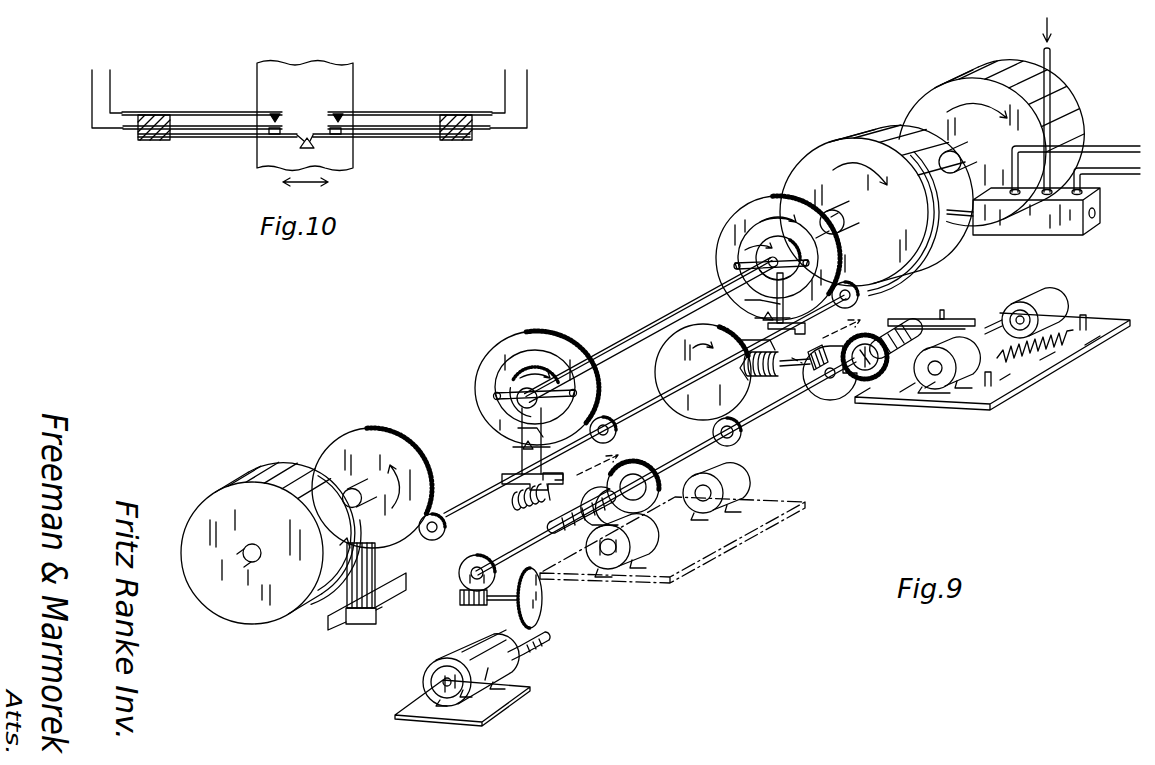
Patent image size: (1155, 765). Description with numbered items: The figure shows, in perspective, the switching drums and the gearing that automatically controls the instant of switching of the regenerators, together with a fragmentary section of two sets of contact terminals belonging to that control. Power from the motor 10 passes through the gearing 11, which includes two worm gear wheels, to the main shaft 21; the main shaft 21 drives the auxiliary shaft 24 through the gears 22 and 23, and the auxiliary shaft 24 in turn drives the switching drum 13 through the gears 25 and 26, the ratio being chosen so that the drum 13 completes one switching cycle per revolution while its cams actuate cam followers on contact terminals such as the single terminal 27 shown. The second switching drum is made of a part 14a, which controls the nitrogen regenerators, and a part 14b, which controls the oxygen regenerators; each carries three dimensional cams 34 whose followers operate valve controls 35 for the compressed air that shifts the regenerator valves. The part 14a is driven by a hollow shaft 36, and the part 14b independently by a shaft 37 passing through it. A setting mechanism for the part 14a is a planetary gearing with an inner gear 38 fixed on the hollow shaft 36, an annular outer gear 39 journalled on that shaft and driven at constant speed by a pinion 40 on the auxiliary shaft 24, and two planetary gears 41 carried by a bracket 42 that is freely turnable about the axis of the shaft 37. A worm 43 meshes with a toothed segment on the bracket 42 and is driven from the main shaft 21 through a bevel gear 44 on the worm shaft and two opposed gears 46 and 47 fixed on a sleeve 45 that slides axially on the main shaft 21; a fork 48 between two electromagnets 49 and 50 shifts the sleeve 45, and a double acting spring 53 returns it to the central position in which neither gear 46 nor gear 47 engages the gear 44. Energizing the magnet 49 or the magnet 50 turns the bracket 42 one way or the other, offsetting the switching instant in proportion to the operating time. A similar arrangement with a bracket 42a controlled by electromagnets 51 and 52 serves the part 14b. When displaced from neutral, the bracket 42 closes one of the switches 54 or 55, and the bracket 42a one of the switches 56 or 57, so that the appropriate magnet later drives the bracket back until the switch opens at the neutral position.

In FIG. 9, the motor 10 is at (465, 650).
In FIG. 9, the gearing 11 is at (505, 598).
In FIG. 9, the switching drum 13 is at (218, 507).
In FIG. 9, the part of switching drum 14a is at (807, 173).
In FIG. 9, the part of switching drum 14b is at (932, 103).
In FIG. 9, the main shaft 21 is at (765, 415).
In FIG. 9, the gear 22 is at (738, 440).
In FIG. 9, the gear 23 is at (700, 405).
In FIG. 9, the auxiliary shaft 24 is at (660, 410).
In FIG. 9, the gear 25 is at (434, 541).
In FIG. 9, the gear 26 is at (362, 440).
In FIG. 9, the contact terminal 27 is at (357, 620).
In FIG. 9, the three dimensional cam 34 is at (930, 250).
In FIG. 9, the valve control 35 is at (1045, 225).
In FIG. 9, the hollow shaft 36 is at (858, 220).
In FIG. 9, the shaft 37 is at (620, 338).
In FIG. 9, the inner gear 38 is at (760, 238).
In FIG. 9, the annular outer gear 39 is at (722, 232).
In FIG. 9, the pinion 40 is at (858, 297).
In FIG. 9, the planetary gear 41 is at (735, 256).
In FIG. 10, the bracket 42 is at (323, 78).
In FIG. 9, the bracket 42 is at (760, 290).
In FIG. 9, the bracket 42a is at (525, 415).
In FIG. 9, the worm 43 is at (770, 372).
In FIG. 9, the bevel gear 44 is at (822, 352).
In FIG. 9, the sleeve 45 is at (860, 375).
In FIG. 9, the bevel gear 46 is at (835, 392).
In FIG. 9, the bevel gear 47 is at (883, 372).
In FIG. 9, the fork 48 is at (928, 322).
In FIG. 9, the electromagnet 49 is at (936, 389).
In FIG. 9, the electromagnet 50 is at (1050, 315).
In FIG. 9, the electromagnet 51 is at (612, 560).
In FIG. 9, the electromagnet 52 is at (740, 485).
In FIG. 9, the double acting spring 53 is at (1065, 338).
In FIG. 10, the switch 54 is at (402, 112).
In FIG. 9, the switch 54 is at (745, 300).
In FIG. 10, the switch 55 is at (220, 112).
In FIG. 9, the switch 55 is at (760, 318).
In FIG. 9, the switch 56 is at (518, 430).
In FIG. 9, the switch 57 is at (520, 447).